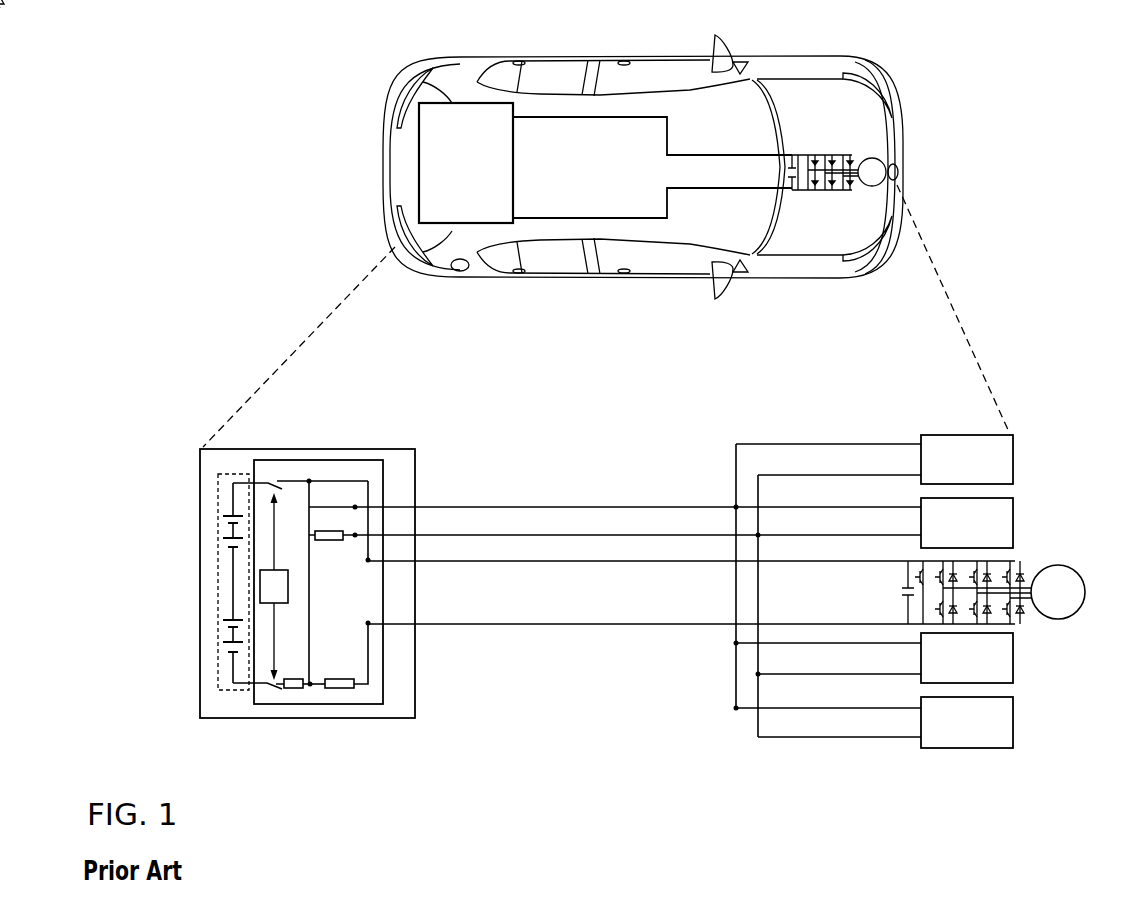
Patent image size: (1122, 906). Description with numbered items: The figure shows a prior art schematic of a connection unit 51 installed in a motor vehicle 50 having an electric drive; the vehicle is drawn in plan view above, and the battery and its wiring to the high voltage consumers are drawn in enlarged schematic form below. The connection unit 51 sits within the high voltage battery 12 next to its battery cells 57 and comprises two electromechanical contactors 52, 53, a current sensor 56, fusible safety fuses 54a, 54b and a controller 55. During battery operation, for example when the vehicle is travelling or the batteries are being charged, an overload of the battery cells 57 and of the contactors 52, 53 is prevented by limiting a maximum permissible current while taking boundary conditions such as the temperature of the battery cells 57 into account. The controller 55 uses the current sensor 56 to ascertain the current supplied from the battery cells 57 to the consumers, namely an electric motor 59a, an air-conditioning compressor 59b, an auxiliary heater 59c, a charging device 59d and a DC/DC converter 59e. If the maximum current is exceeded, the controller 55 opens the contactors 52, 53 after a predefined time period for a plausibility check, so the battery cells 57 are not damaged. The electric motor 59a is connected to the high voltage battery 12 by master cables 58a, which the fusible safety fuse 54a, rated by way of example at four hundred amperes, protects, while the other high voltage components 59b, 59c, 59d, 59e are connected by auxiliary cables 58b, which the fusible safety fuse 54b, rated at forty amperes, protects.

The motor vehicle 50 is at (460, 88).
The high voltage battery 12 is at (217, 517).
The battery cells 57 is at (201, 584).
The connection unit 51 is at (264, 703).
The electromechanical contactor 52 is at (280, 464).
The electromechanical contactor 53 is at (276, 702).
The controller 55 is at (268, 589).
The current sensor 56 is at (290, 687).
The fusible safety fuse 54a is at (343, 688).
The fusible safety fuse 54b is at (330, 533).
The master cables 58a is at (672, 561).
The auxiliary cables 58b is at (485, 535).
The electric motor 59a is at (1075, 612).
The air-conditioning compressor 59b is at (1013, 455).
The auxiliary heater 59c is at (1013, 526).
The charging device 59d is at (1013, 669).
The DC/DC converter 59e is at (1013, 729).